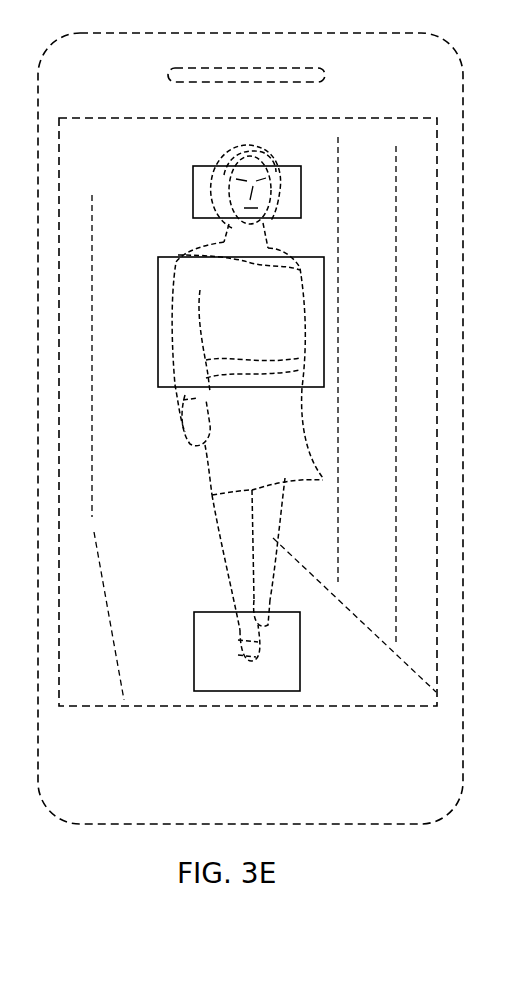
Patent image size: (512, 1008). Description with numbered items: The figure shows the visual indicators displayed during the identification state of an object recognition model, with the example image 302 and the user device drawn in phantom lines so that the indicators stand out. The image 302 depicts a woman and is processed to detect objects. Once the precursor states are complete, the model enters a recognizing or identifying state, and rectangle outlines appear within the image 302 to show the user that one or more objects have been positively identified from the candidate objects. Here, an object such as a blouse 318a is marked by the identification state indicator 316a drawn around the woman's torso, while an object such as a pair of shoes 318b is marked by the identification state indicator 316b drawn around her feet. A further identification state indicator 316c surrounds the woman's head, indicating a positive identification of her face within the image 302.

The image 302 is at (381, 683).
The identification state indicator 316a is at (157, 387).
The identification state indicator 316b is at (194, 612).
The identification state indicator 316c is at (193, 190).
The object (blouse) 318a is at (218, 270).
The object (pair of shoes) 318b is at (260, 665).